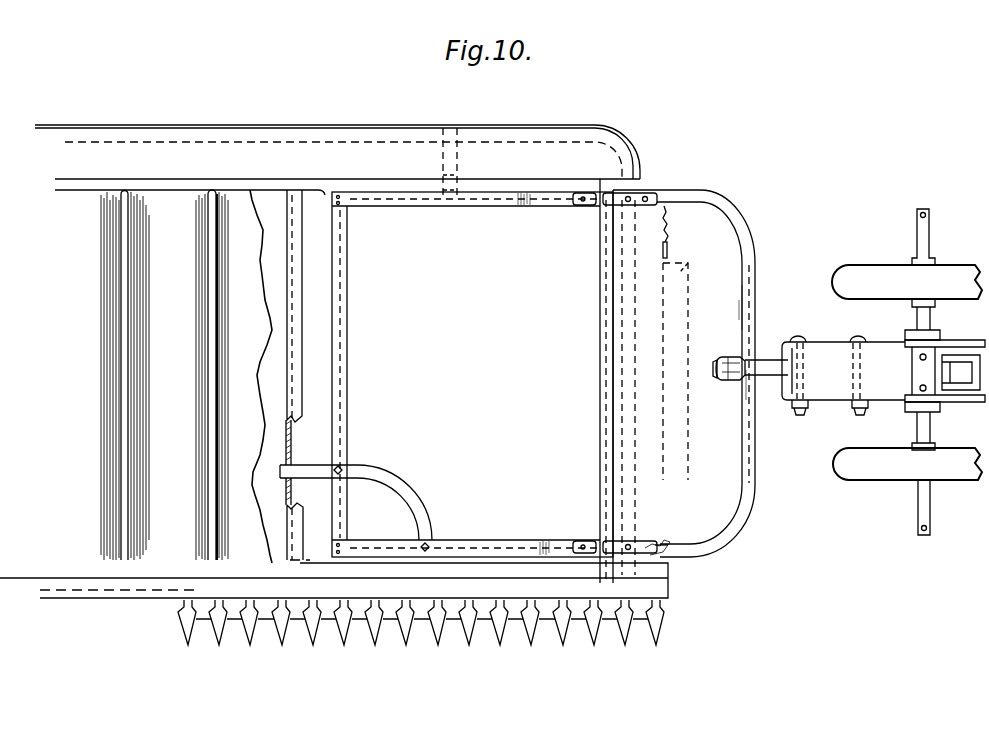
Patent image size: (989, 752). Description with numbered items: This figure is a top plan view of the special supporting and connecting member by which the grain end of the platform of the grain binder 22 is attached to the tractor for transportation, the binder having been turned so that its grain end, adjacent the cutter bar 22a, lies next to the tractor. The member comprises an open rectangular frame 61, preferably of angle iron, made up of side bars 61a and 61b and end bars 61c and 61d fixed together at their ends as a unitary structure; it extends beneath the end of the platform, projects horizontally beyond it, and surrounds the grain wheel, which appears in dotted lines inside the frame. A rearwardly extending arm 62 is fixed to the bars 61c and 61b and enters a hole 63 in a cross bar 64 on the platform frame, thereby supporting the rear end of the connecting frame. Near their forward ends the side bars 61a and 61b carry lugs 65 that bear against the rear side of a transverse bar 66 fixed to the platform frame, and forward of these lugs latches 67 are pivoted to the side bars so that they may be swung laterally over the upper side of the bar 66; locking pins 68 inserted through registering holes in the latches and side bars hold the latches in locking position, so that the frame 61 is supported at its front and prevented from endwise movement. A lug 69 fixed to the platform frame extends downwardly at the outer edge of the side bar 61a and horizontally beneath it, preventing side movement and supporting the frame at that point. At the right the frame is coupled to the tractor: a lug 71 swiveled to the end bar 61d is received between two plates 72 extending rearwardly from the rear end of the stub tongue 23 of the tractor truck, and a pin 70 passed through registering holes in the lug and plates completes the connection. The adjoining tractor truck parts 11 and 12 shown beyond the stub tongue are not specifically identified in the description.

The wheel 11 is at (860, 282).
The axle pin 12 is at (918, 515).
The grain binder 22 is at (334, 361).
The cutter bar 22a is at (421, 635).
The stub tongue 23 is at (883, 374).
The open rectangular frame 61 is at (472, 374).
The side bar 61a is at (517, 200).
The side bar 61b is at (489, 540).
The end bar 61c is at (347, 388).
The end bar 61d is at (748, 287).
The rearwardly extending arm 62 is at (338, 452).
The hole 63 is at (297, 458).
The cross bar 64 is at (297, 368).
The lugs 65 is at (592, 208).
The transverse bar 66 is at (605, 298).
The latches 67 is at (646, 196).
The locking pins 68 is at (662, 555).
The lug 69 is at (455, 183).
The pin 70 is at (731, 382).
The lug 71 is at (719, 380).
The plates 72 is at (768, 360).